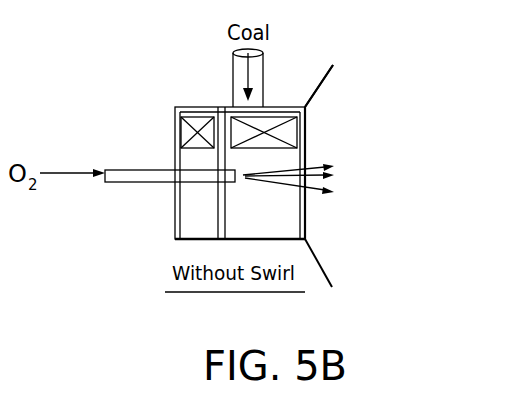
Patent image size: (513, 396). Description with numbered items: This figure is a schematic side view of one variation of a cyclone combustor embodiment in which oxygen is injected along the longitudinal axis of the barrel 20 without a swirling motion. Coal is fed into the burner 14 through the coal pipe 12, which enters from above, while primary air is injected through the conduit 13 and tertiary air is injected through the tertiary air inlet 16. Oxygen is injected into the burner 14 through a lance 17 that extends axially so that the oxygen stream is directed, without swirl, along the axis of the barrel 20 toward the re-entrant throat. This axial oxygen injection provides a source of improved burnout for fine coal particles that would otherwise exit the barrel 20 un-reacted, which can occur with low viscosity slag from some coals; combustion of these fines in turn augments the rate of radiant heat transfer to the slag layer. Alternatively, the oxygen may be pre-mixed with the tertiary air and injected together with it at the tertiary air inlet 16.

The coal pipe 12 is at (264, 64).
The conduit 13 is at (229, 127).
The burner 14 is at (179, 240).
The tertiary air inlet 16 is at (188, 130).
The lance 17 is at (156, 183).
The barrel 20 is at (317, 90).